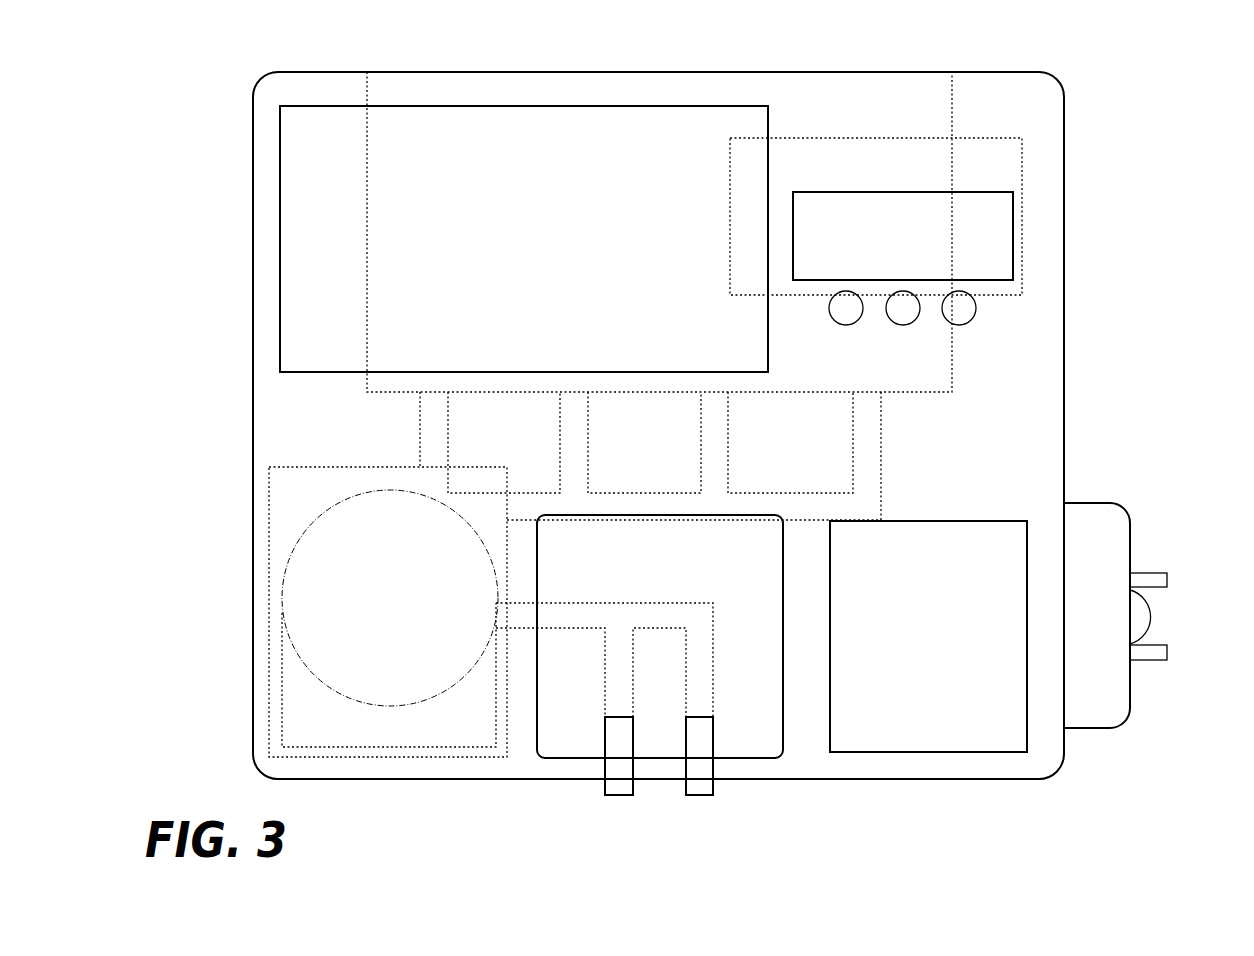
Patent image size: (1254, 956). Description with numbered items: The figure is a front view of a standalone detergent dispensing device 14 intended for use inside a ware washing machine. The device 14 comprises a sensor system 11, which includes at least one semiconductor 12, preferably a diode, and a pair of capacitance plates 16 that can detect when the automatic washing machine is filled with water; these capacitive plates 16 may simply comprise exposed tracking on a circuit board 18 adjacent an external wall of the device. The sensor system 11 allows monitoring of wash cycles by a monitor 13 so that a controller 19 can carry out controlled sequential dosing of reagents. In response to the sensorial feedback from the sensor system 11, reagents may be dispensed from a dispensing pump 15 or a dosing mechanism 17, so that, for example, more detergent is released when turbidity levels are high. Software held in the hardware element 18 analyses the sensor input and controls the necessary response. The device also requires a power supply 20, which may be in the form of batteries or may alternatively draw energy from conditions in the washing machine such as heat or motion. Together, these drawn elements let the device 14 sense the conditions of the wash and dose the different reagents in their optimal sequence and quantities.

The sensor system 11 is at (1102, 512).
The semiconductor 12 is at (1147, 578).
The monitor 13 is at (985, 248).
The standalone detergent dispensing device 14 is at (1137, 164).
The dispensing pump 15 is at (322, 562).
The capacitance plates 16 is at (1140, 612).
The dosing mechanism 17 is at (623, 783).
The hardware element 18 is at (977, 733).
The controller 19 is at (965, 306).
The power supply 20 is at (975, 165).